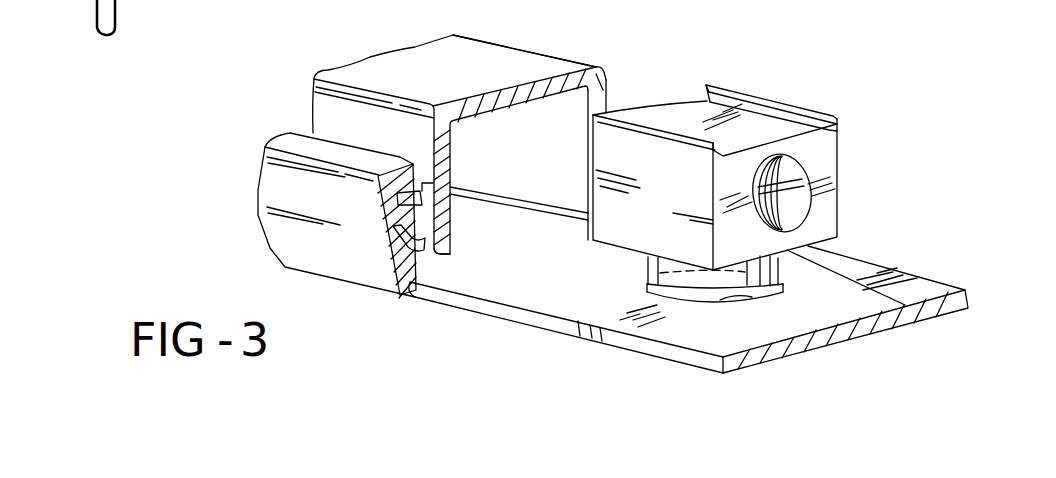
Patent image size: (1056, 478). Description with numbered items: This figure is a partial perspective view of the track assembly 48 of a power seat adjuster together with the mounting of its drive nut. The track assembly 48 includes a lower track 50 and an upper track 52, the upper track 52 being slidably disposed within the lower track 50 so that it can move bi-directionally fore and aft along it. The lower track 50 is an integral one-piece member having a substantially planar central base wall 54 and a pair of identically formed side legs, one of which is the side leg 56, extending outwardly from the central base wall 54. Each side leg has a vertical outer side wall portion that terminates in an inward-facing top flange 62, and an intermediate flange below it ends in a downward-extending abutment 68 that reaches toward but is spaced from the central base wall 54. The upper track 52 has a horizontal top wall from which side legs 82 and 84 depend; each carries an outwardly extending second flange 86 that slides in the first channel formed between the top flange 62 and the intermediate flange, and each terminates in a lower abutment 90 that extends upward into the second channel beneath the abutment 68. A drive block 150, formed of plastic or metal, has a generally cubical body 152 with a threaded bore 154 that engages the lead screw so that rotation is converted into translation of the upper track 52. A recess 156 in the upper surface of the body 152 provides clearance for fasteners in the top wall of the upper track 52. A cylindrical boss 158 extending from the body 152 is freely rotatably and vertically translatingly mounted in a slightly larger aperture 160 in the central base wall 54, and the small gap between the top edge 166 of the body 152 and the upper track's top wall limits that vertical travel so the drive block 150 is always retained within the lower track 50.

The track assembly 48 is at (575, 36).
The lower track 50 is at (474, 317).
The upper track 52 is at (437, 66).
The central base wall 54 is at (906, 283).
The side leg 56 is at (250, 230).
The top flange 62 is at (418, 167).
The abutment 68 is at (447, 243).
The side leg 82 is at (320, 106).
The side leg 84 is at (610, 78).
The second flange 86 is at (424, 183).
The lower abutment 90 is at (425, 226).
The drive block 150 is at (858, 119).
The body 152 is at (827, 165).
The threaded bore 154 is at (820, 196).
The recess 156 is at (706, 90).
The cylindrical boss 158 is at (786, 252).
The aperture 160 is at (826, 332).
The top edge 166 is at (760, 96).